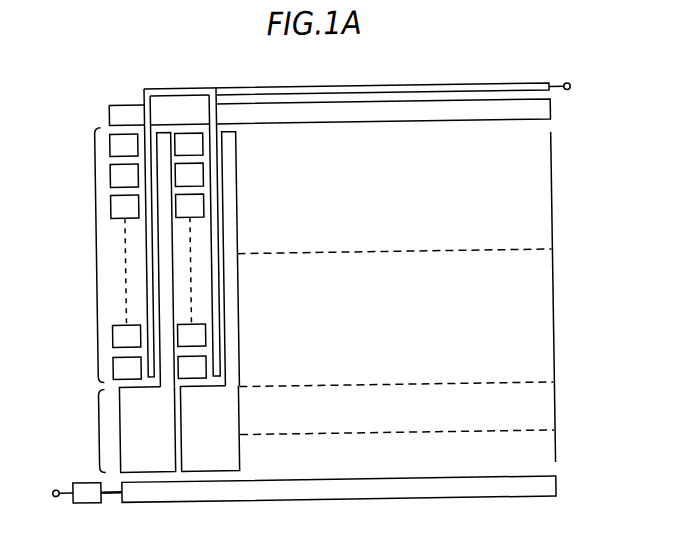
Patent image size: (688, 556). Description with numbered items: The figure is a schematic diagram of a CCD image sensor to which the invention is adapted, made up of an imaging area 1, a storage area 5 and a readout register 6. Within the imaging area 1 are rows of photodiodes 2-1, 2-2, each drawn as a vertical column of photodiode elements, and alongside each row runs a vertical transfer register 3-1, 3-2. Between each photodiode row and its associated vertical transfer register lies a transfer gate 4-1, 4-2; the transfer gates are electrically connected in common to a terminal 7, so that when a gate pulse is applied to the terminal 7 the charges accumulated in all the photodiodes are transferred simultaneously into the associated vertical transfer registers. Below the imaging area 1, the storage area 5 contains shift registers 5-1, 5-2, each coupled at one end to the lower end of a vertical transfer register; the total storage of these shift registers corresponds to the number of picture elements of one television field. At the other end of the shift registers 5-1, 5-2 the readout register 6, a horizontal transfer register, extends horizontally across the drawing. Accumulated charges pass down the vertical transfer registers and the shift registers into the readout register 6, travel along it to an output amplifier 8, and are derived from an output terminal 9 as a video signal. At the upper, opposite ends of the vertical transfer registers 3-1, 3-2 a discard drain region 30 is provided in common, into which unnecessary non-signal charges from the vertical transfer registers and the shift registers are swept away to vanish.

The imaging area 1 is at (313, 295).
The row of photodiodes 2-1 is at (120, 146).
The row of photodiodes 2-2 is at (188, 142).
The vertical transfer register 3-1 is at (164, 284).
The vertical transfer register 3-2 is at (226, 183).
The transfer gate 4-1 is at (147, 290).
The transfer gate 4-2 is at (210, 233).
The storage area 5 is at (92, 431).
The shift register 5-1 is at (115, 408).
The shift register 5-2 is at (218, 413).
The readout register 6 is at (463, 504).
The terminal 7 is at (570, 95).
The output amplifier 8 is at (84, 497).
The output terminal 9 is at (49, 489).
The discard drain region 30 is at (346, 113).